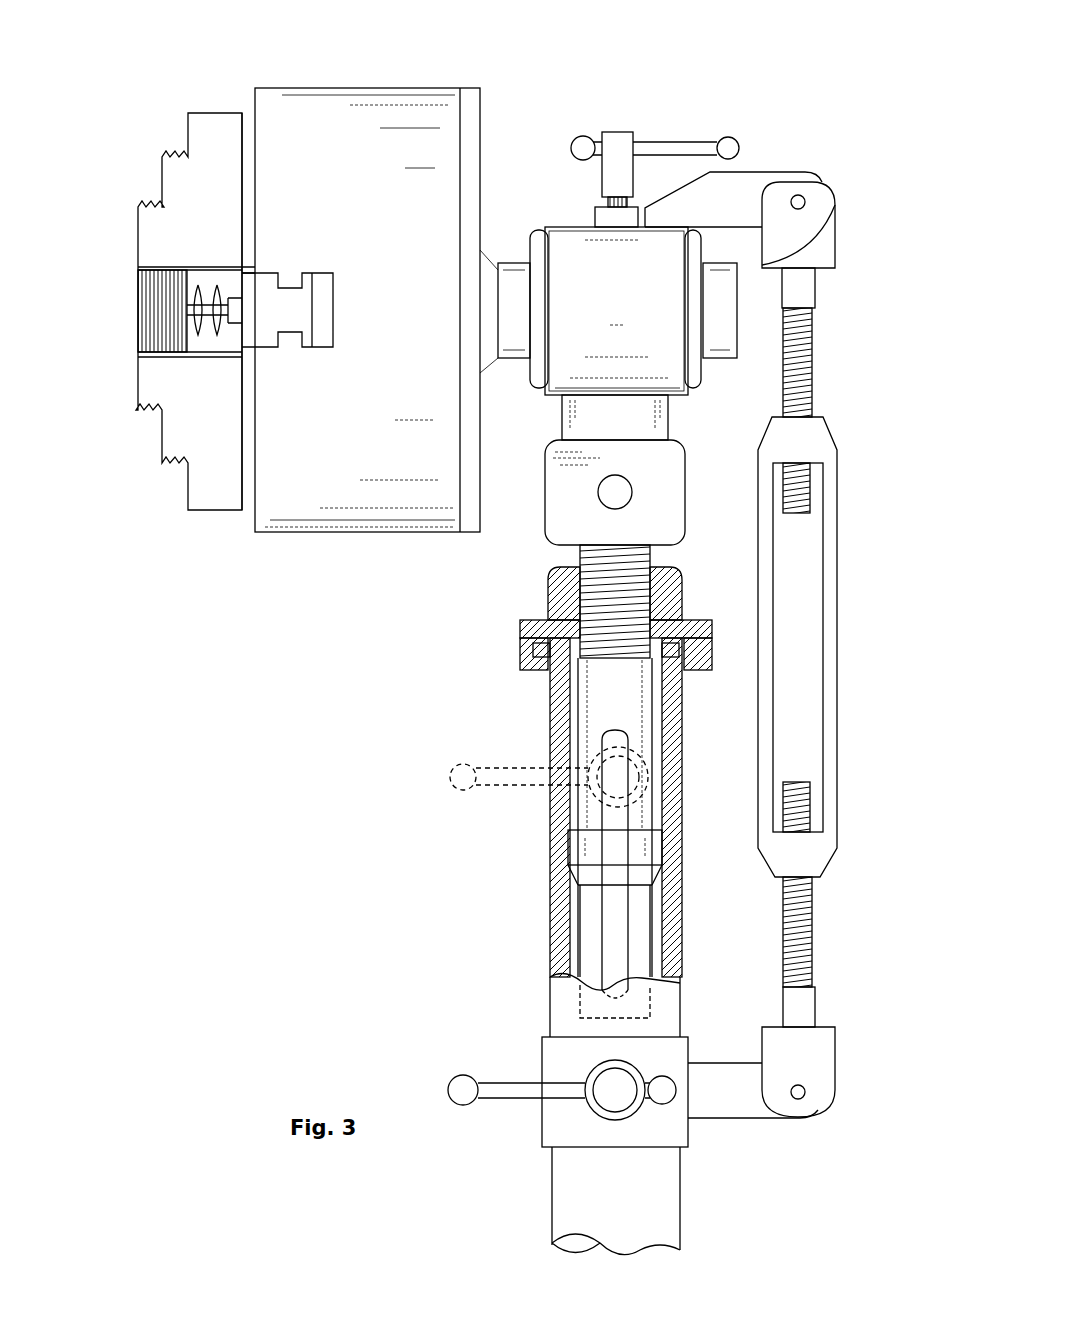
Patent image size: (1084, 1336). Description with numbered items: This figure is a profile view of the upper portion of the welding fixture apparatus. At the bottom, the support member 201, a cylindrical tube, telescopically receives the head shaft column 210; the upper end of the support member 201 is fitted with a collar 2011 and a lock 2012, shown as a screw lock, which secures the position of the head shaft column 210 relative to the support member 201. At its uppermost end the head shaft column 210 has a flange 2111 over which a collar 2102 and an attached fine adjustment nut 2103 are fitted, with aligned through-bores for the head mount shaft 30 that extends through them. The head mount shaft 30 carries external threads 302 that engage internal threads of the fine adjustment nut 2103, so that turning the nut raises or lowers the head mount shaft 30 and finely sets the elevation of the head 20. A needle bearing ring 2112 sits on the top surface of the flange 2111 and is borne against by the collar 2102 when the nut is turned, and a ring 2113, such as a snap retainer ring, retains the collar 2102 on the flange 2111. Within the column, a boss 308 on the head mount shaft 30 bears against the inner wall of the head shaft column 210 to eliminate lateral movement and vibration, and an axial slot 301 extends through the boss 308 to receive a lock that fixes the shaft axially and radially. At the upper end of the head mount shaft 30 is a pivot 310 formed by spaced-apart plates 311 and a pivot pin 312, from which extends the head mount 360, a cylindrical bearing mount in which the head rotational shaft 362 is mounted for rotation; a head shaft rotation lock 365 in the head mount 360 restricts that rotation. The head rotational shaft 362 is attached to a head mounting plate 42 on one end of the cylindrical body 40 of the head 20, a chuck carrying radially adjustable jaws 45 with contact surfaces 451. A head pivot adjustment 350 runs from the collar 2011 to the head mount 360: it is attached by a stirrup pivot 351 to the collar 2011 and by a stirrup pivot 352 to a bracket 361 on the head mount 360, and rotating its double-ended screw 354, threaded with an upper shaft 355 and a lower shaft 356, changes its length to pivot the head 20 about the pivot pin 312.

The head 20 is at (343, 78).
The jaws 45 is at (222, 130).
The contact surfaces 451 is at (160, 210).
The head mounting plate 42 is at (470, 125).
The cylindrical body 40 is at (297, 531).
The head shaft rotation lock 365 is at (637, 132).
The bracket 361 is at (748, 185).
The head rotational shaft 362 is at (720, 302).
The stirrup pivot 352 is at (845, 252).
The upper shaft 355 is at (823, 357).
The head mount 360 is at (655, 368).
The head pivot adjustment 350 is at (848, 628).
The double-ended screw 354 is at (830, 755).
The lower shaft 356 is at (825, 962).
The stirrup pivot 351 is at (843, 1070).
The pivot 310 is at (535, 513).
The pivot pin 312 is at (603, 492).
The plates 311 is at (588, 523).
The external threads 302 is at (578, 553).
The needle bearing ring 2112 is at (700, 628).
The fine adjustment nut 2103 is at (530, 628).
The collar 2102 is at (540, 648).
The flange 2111 is at (538, 665).
The ring 2113 is at (543, 680).
The head mount shaft 30 is at (585, 815).
The boss 308 is at (590, 851).
The axial slot 301 is at (617, 903).
The head shaft column 210 is at (565, 1012).
The collar 2011 is at (548, 1125).
The lock 2012 is at (632, 1120).
The support member 201 is at (635, 1203).